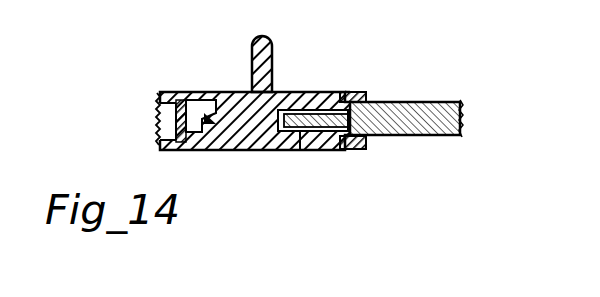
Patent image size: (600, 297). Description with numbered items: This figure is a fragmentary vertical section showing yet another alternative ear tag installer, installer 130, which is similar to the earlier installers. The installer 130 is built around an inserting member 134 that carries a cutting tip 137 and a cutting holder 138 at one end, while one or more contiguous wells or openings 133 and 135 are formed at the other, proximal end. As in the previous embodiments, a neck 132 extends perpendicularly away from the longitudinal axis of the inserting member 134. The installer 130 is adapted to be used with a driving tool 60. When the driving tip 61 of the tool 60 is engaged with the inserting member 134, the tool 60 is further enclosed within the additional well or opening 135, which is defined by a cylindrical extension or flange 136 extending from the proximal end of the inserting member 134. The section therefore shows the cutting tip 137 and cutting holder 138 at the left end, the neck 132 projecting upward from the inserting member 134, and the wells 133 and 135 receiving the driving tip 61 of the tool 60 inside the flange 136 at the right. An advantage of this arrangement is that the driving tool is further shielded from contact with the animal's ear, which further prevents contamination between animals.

The installer 130 is at (218, 64).
The neck 132 is at (273, 60).
The well or opening 133 is at (290, 152).
The inserting member 134 is at (222, 151).
The additional well or opening 135 is at (330, 152).
The cylindrical extension or flange 136 is at (362, 93).
The cutting tip 137 is at (155, 124).
The cutting holder 138 is at (164, 98).
The driving tool 60 is at (446, 82).
The driving tip 61 is at (320, 92).